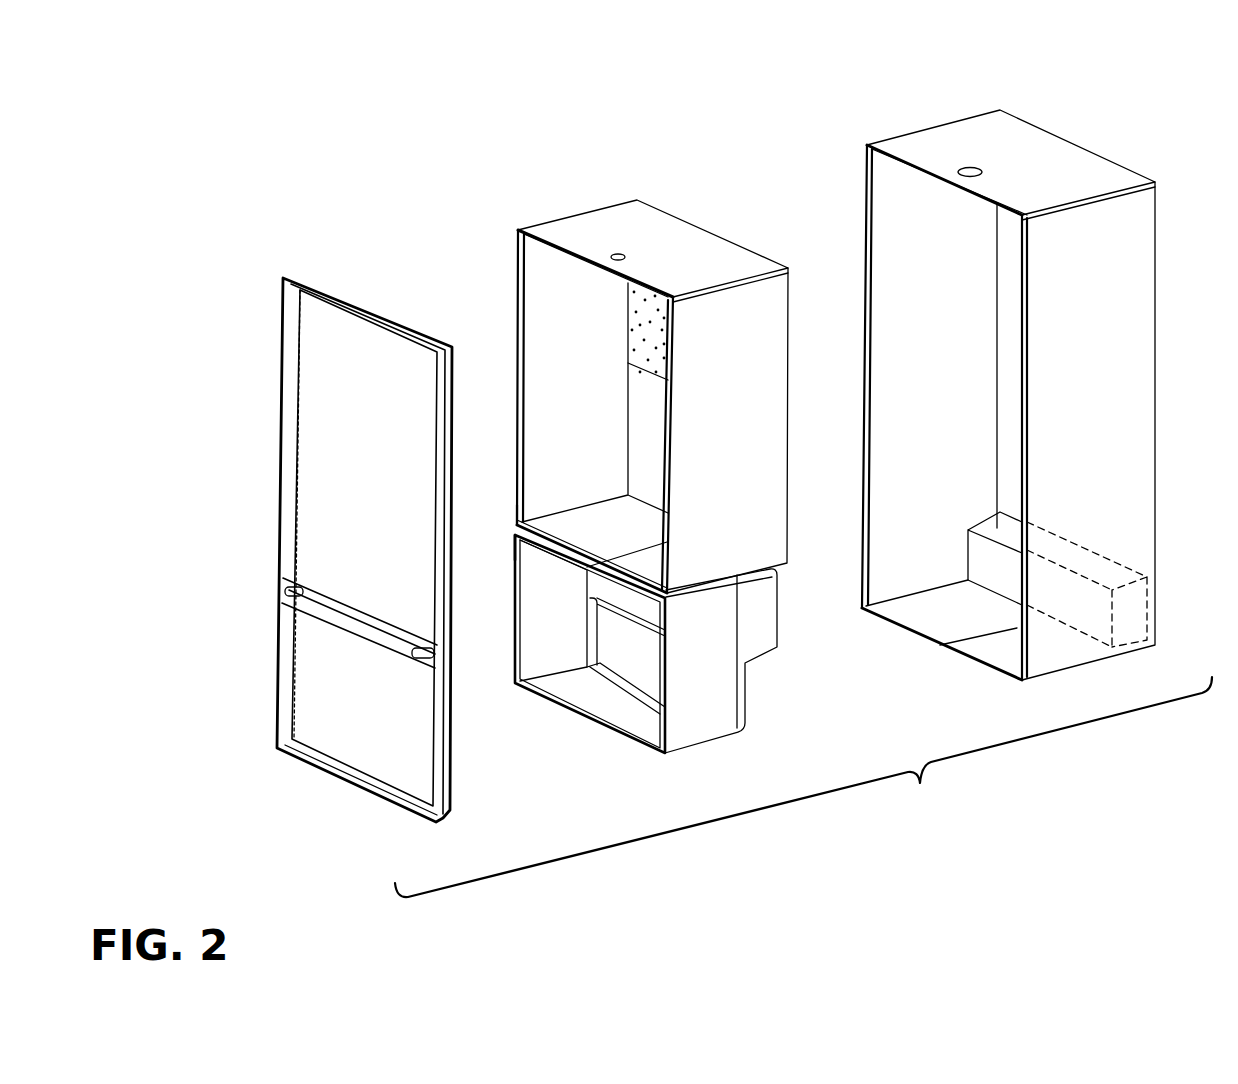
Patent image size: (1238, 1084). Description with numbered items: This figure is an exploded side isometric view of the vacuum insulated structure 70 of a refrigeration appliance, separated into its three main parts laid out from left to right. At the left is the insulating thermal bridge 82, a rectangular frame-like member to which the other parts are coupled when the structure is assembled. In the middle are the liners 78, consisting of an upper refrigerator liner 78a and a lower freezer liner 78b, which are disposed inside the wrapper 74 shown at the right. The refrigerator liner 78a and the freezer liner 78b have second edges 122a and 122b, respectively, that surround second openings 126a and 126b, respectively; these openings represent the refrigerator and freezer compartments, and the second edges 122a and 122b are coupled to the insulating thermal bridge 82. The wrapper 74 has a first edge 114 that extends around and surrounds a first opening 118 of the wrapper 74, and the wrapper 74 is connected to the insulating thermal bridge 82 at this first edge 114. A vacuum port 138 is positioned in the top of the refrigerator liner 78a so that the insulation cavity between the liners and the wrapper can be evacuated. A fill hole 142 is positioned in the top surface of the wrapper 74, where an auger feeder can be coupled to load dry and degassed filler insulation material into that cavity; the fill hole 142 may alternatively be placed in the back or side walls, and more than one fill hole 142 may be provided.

The vacuum insulated structure 70 is at (803, 787).
The wrapper 74 is at (975, 379).
The liner 78 is at (631, 454).
The refrigerator liner 78a is at (712, 258).
The freezer liner 78b is at (631, 674).
The insulating thermal bridge 82 is at (266, 301).
The first edge 114 is at (862, 242).
The first opening 118 is at (909, 527).
The second edge of refrigerator liner 122a is at (513, 501).
The second edge of freezer liner 122b is at (512, 574).
The second opening of refrigerator liner 126a is at (546, 309).
The second opening of freezer liner 126b is at (546, 640).
The vacuum port 138 is at (624, 255).
The fill hole 142 is at (978, 170).